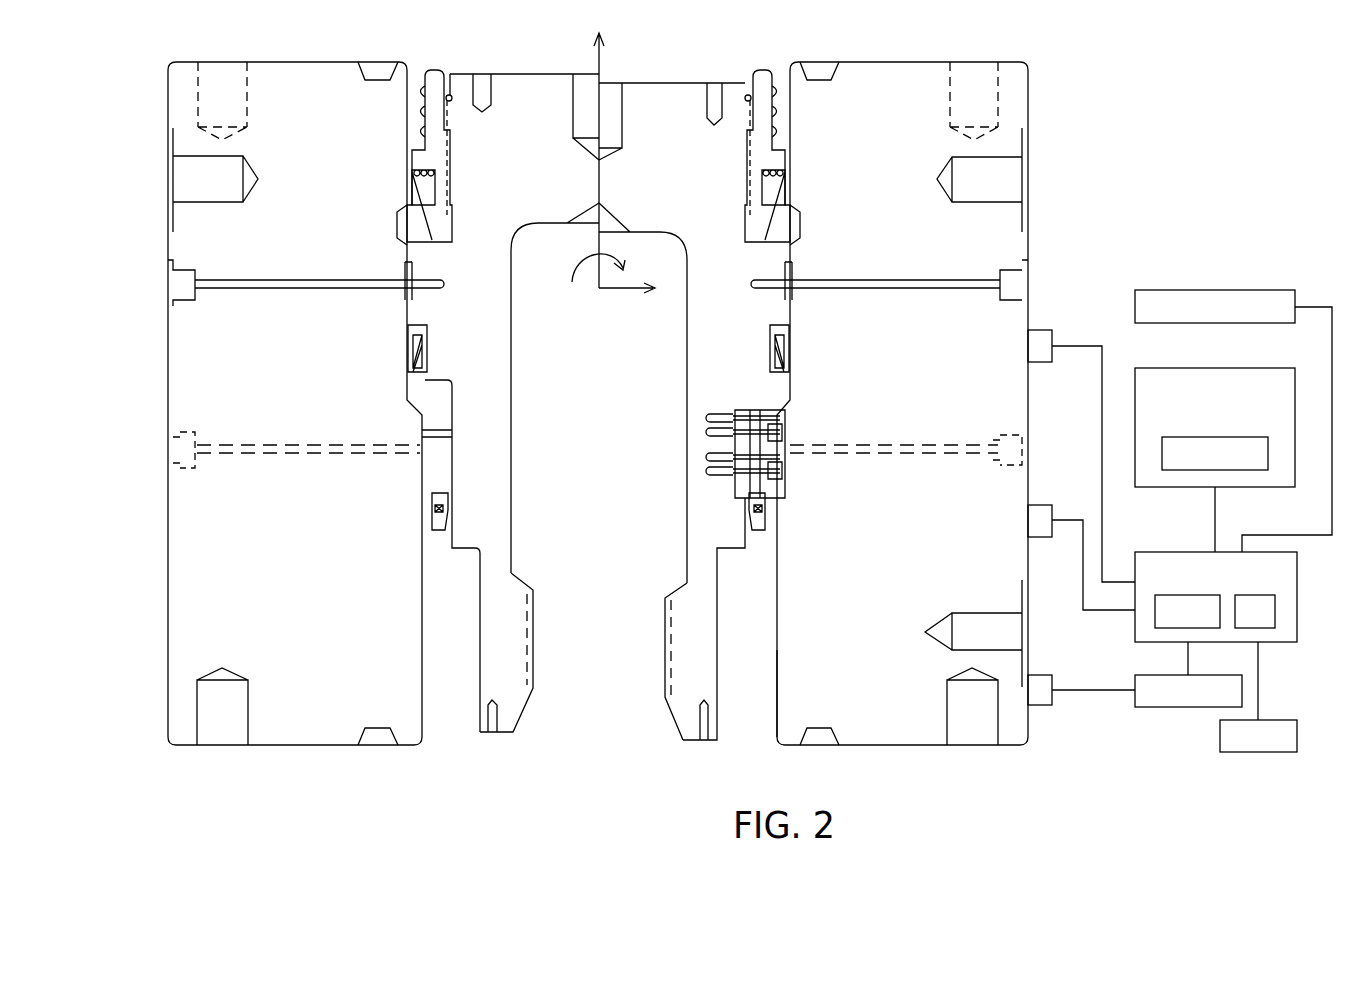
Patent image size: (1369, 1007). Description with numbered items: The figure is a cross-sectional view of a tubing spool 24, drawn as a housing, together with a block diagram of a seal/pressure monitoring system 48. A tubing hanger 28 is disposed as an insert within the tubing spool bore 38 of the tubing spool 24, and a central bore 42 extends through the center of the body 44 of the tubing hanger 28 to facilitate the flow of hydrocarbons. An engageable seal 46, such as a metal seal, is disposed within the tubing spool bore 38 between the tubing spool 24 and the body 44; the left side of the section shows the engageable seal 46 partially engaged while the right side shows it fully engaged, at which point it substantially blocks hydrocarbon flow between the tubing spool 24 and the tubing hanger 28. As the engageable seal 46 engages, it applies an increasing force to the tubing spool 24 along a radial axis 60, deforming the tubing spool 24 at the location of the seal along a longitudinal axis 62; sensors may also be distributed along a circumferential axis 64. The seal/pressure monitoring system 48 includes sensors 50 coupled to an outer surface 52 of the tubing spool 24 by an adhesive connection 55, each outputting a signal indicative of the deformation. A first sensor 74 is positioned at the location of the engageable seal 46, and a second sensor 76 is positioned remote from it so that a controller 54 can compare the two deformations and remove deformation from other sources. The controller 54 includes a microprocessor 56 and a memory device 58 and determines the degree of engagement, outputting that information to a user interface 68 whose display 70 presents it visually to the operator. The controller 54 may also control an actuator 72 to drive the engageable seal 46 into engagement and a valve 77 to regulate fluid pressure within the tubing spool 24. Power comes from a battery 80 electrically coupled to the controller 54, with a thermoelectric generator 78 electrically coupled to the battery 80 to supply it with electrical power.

The tubing spool 24 is at (1015, 725).
The tubing hanger 28 is at (662, 107).
The tubing spool bore 38 is at (775, 682).
The central bore 42 is at (511, 410).
The body 44 is at (527, 92).
The engageable seal 46 is at (430, 345).
The seal/pressure monitoring system 48 is at (1128, 665).
The sensor 50 is at (1057, 286).
The outer surface 52 is at (1030, 104).
The controller 54 is at (1297, 597).
The adhesive connection 55 is at (1039, 377).
The microprocessor 56 is at (1275, 612).
The memory device 58 is at (1197, 630).
The radial axis 60 is at (630, 290).
The longitudinal axis 62 is at (602, 62).
The circumferential axis 64 is at (580, 290).
The user interface 68 is at (1218, 368).
The display 70 is at (1190, 470).
The actuator 72 is at (1218, 290).
The first sensor 74 is at (1042, 330).
The second sensor 76 is at (1040, 505).
The valve 77 is at (1253, 752).
The thermoelectric generator 78 is at (1040, 675).
The battery 80 is at (1188, 707).